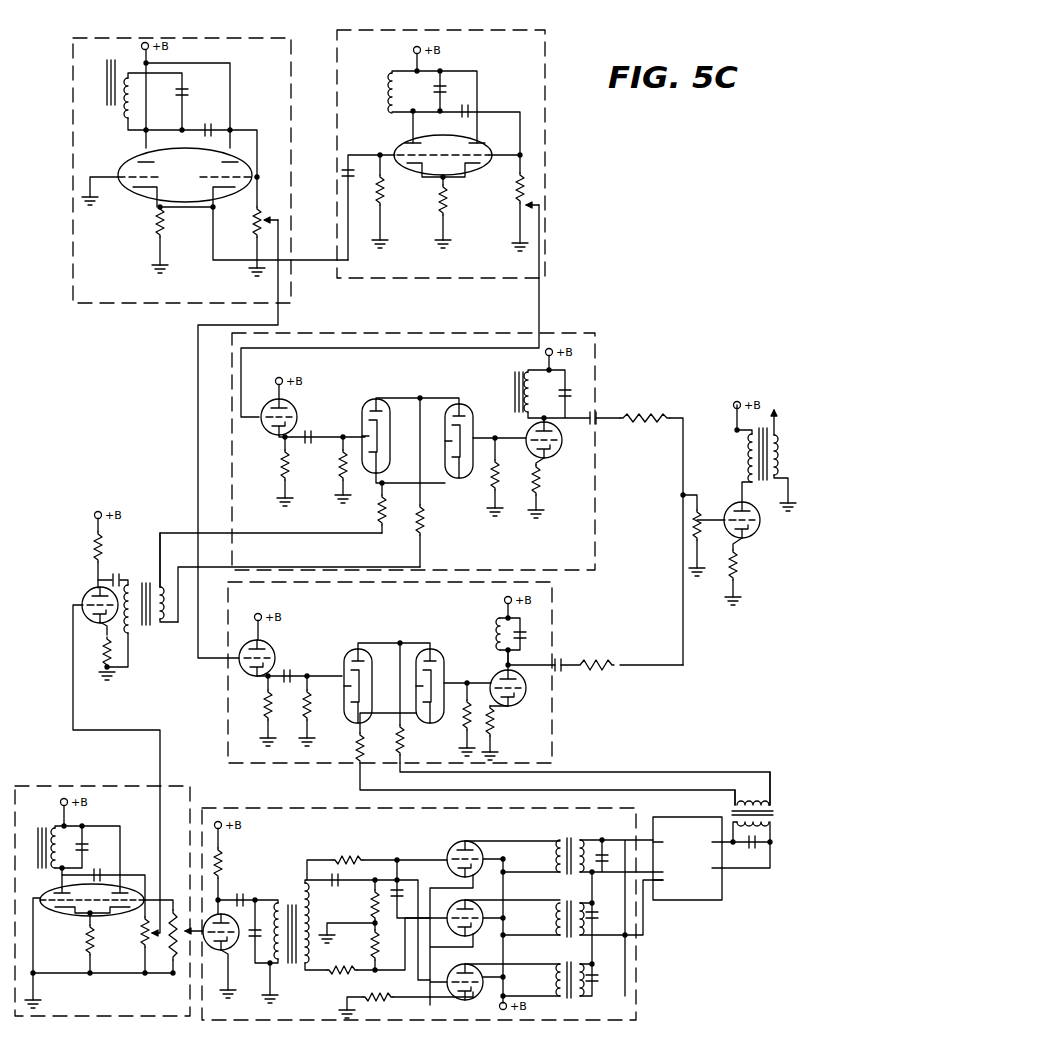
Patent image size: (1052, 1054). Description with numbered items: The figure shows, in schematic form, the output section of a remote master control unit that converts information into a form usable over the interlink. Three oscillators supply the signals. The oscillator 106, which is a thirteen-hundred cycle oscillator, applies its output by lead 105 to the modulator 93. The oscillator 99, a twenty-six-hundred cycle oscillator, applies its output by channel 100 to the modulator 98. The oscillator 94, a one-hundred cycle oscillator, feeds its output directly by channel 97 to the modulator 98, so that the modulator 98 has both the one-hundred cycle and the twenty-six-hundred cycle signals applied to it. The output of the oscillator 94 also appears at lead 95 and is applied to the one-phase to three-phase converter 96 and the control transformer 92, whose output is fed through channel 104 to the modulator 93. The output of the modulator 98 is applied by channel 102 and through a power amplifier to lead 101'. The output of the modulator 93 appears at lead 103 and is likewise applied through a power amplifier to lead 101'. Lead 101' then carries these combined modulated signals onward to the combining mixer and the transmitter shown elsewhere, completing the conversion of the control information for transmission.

The control transformer 92 is at (697, 901).
The modulator 93 is at (228, 725).
The oscillator 94 is at (108, 1017).
The lead 95 is at (183, 934).
The one-phase to three-phase converter 96 is at (292, 1017).
The channel 97 is at (160, 762).
The modulator 98 is at (590, 333).
The oscillator 99 is at (402, 23).
The channel 100 is at (539, 297).
The lead 101' is at (783, 434).
The channel 102 is at (603, 420).
The lead 103 is at (564, 670).
The channel 104 is at (690, 771).
The lead 105 is at (198, 412).
The oscillator 106 is at (72, 86).